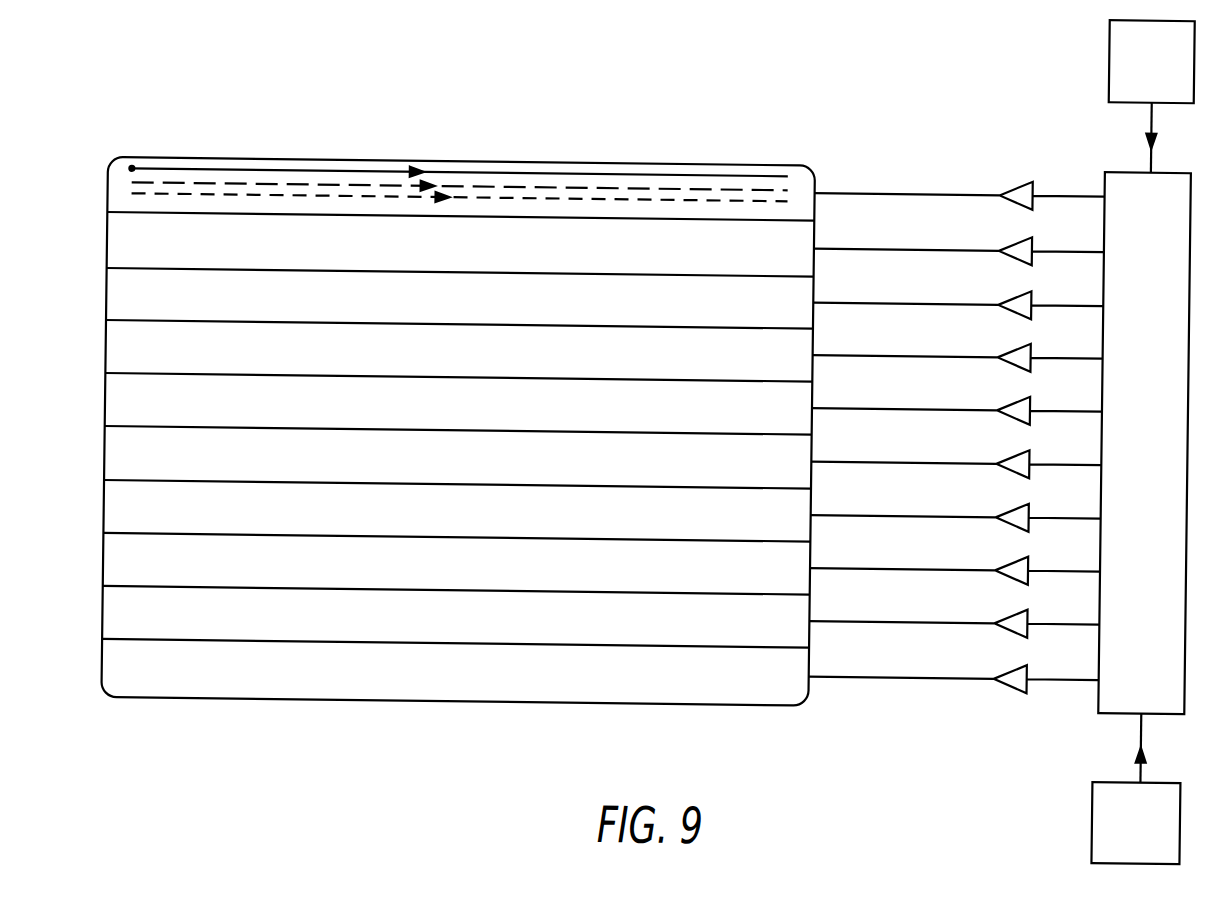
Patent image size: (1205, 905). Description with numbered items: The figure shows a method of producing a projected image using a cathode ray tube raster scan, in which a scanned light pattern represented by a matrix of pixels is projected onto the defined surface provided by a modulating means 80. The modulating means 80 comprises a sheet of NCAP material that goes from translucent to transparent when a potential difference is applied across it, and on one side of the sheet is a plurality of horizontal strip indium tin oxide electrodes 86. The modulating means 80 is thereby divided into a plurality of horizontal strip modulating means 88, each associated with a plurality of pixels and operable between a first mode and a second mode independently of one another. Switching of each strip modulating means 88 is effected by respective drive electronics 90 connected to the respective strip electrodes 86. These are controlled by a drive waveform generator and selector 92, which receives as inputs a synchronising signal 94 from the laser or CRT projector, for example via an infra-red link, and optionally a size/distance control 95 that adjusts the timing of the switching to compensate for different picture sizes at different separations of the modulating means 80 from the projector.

The modulating means 80 is at (497, 147).
The horizontal strip indium tin oxide electrodes 86 is at (118, 197).
The horizontal strip modulating means 88 is at (471, 257).
The drive electronics 90 is at (1034, 172).
The drive waveform generator and selector 92 is at (1171, 437).
The synchronising signal 94 is at (1172, 65).
The size/distance control 95 is at (1159, 826).